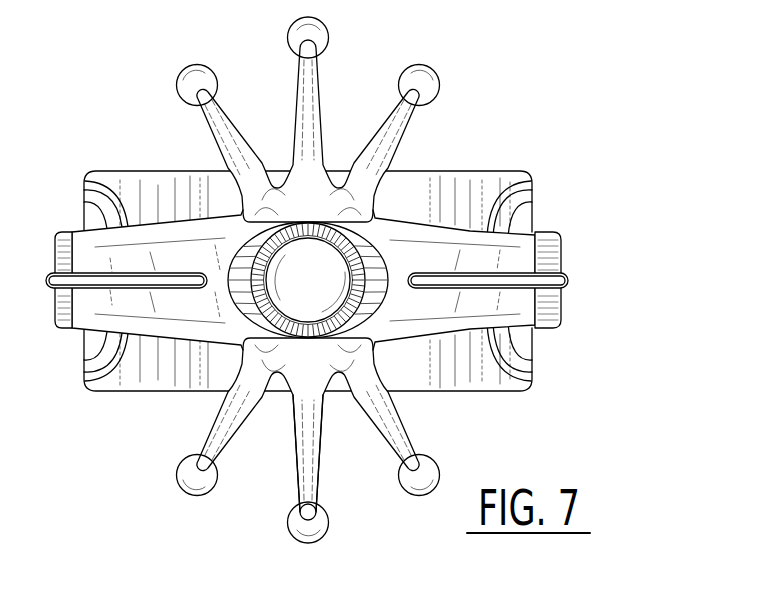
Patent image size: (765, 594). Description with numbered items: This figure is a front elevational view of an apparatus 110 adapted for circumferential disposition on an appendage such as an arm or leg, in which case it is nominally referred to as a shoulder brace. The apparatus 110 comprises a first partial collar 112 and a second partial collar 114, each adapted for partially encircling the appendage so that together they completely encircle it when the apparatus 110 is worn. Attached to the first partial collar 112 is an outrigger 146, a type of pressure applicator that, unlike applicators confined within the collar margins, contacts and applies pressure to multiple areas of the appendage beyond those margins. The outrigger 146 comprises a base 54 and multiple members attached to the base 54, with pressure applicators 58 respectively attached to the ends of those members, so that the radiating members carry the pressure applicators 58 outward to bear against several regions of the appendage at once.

The apparatus 110 is at (518, 90).
The first partial collar 112 is at (186, 307).
The second partial collar 114 is at (536, 222).
The outrigger 146 is at (240, 215).
The base 54 is at (305, 475).
The pressure applicators 58 is at (310, 535).